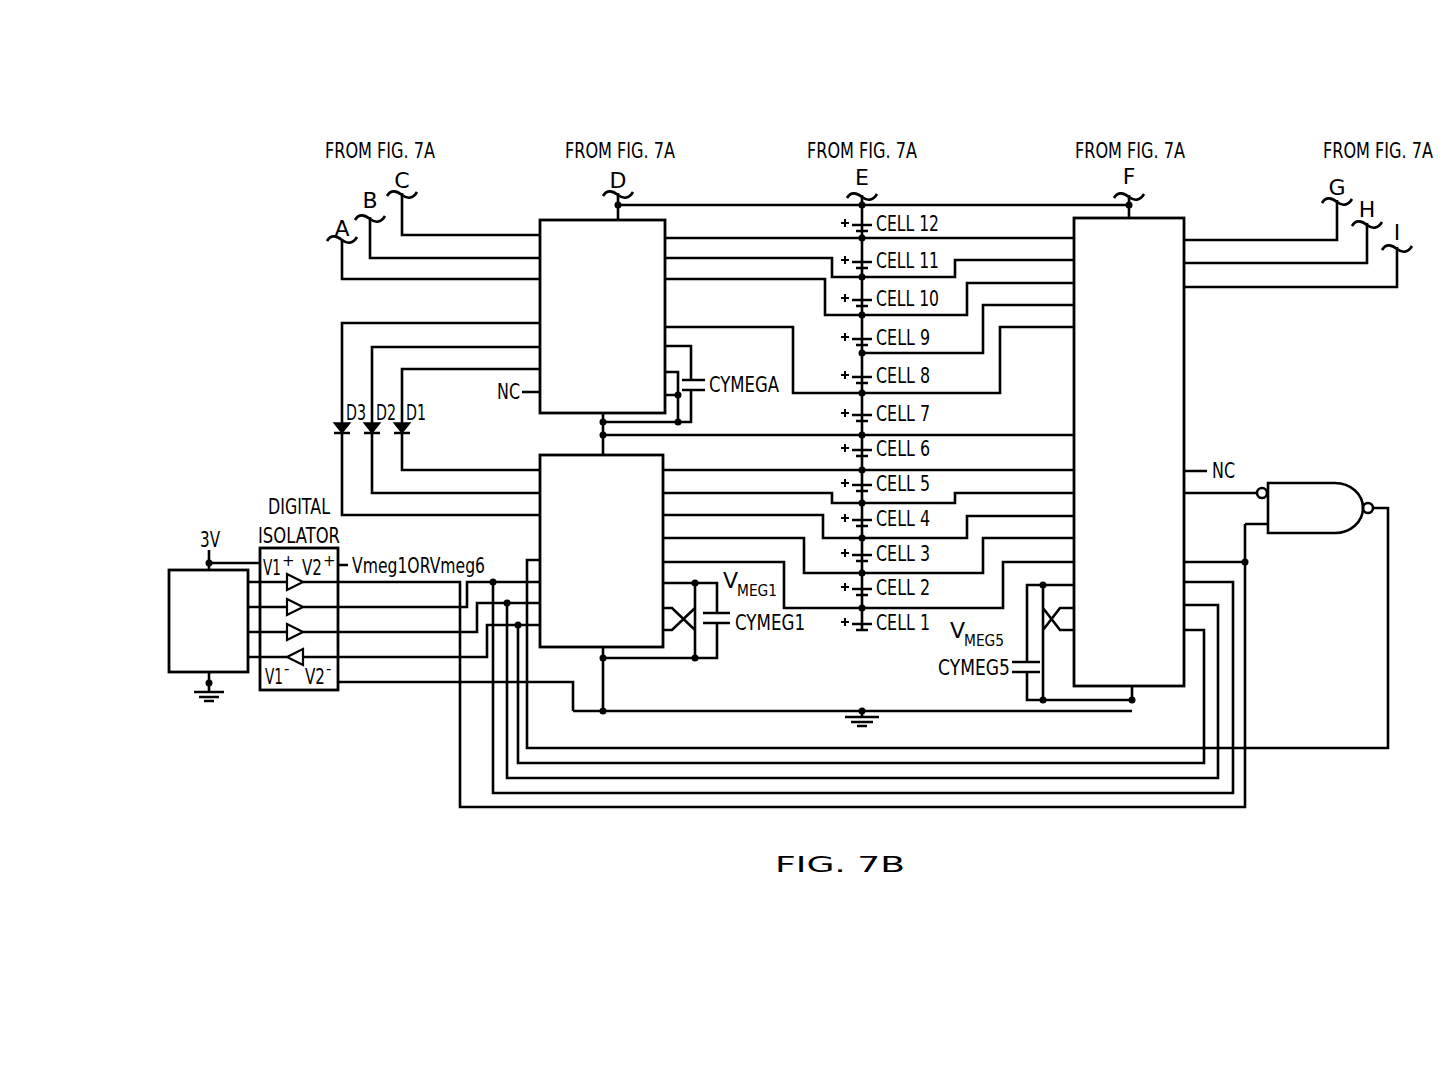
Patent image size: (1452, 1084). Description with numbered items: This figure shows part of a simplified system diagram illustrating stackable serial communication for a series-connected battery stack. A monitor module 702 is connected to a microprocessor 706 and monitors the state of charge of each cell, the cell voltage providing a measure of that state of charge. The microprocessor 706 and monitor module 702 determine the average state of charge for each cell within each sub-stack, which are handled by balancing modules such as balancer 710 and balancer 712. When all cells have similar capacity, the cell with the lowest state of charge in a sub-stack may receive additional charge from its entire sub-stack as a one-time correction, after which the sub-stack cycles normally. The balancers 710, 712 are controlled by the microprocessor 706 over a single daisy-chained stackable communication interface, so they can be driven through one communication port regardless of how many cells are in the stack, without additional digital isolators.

The monitor module 702 is at (1074, 402).
The microprocessor 706 is at (238, 675).
The balancing module 710 is at (540, 550).
The balancing module 712 is at (540, 313).